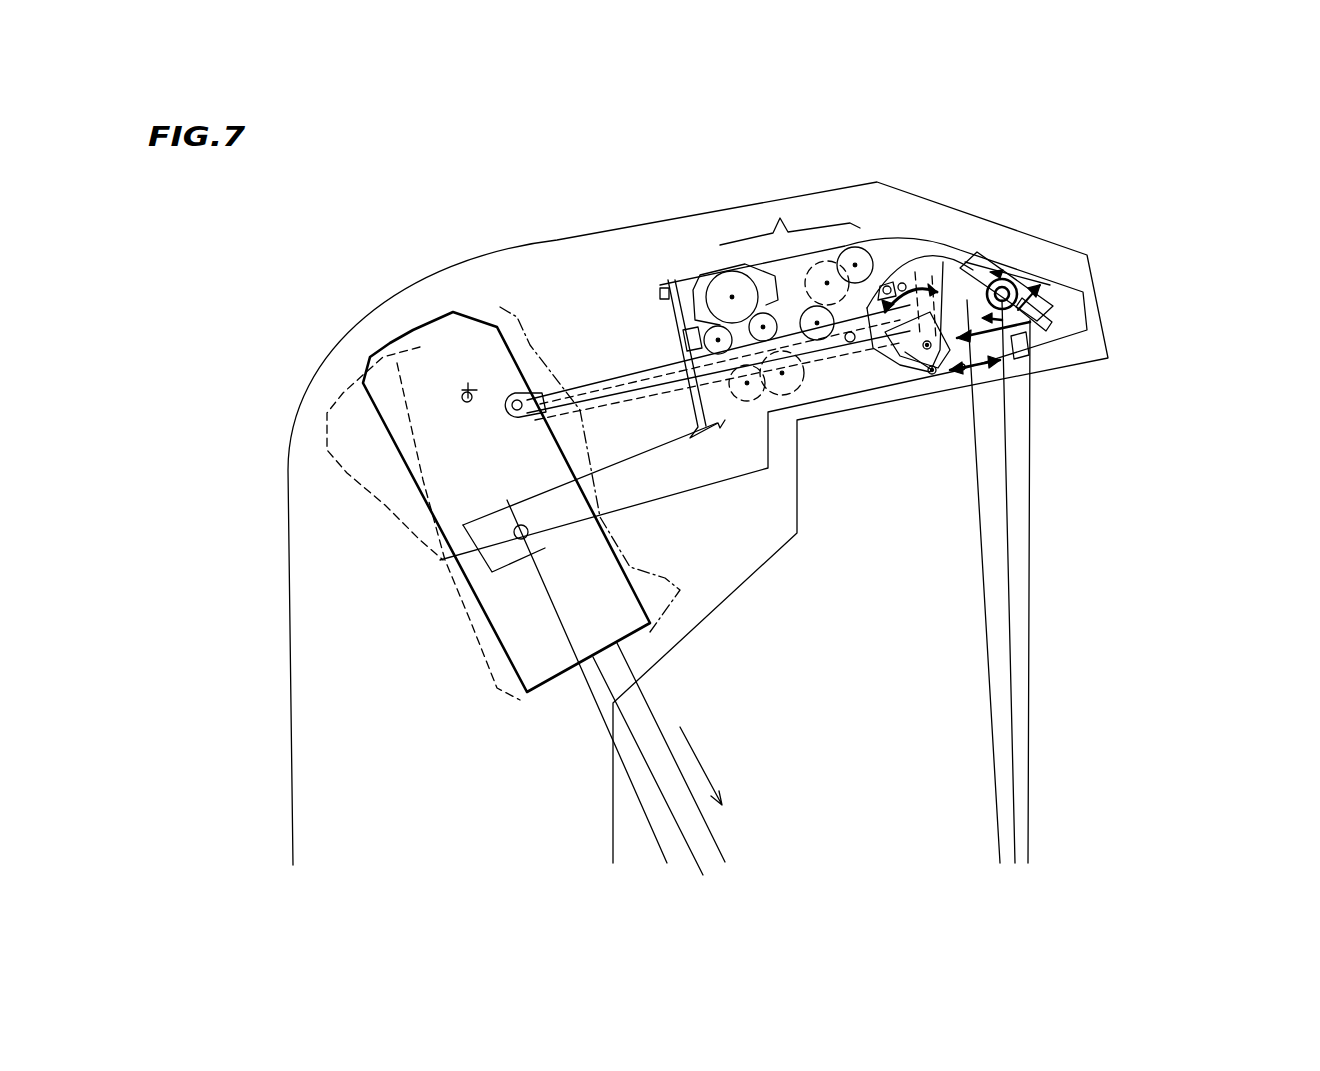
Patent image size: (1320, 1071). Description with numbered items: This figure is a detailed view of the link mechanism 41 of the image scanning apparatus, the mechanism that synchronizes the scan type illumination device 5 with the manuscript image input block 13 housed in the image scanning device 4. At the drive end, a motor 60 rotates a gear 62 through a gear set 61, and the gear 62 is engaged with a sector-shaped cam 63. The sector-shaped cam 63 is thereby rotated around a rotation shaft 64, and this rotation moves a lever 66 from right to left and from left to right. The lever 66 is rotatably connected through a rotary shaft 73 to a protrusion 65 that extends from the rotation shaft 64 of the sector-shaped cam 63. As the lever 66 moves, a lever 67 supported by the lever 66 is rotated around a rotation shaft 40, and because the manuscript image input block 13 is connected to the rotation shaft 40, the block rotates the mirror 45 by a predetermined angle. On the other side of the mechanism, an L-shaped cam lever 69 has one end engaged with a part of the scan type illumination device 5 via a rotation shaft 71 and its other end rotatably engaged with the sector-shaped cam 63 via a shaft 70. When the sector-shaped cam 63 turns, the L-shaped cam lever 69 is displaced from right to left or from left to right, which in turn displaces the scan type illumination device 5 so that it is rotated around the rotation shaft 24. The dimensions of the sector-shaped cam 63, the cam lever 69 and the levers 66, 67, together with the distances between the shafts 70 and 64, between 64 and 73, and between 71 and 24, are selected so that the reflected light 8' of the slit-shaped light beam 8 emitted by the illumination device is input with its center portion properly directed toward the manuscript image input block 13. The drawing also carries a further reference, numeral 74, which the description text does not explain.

The image scanning device 4 is at (667, 258).
The scan type illumination device 5 is at (393, 343).
The slit-shaped light beam 8 is at (659, 759).
The reflected light 8' is at (1048, 581).
The manuscript image input block 13 is at (1010, 278).
The rotation shaft 24 is at (513, 535).
The rotation shaft 40 is at (1030, 282).
The link mechanism 41 is at (597, 368).
The mirror 45 is at (1080, 292).
The motor 60 is at (720, 272).
The gear set 61 is at (780, 216).
The gear 62 is at (858, 247).
The sector-shaped cam 63 is at (933, 278).
The rotation shaft 64 is at (880, 365).
The protrusion 65 is at (900, 375).
The lever 66 is at (962, 367).
The lever 67 is at (1028, 335).
The L-shaped cam lever 69 is at (663, 370).
The shaft 70 is at (885, 277).
The rotation shaft 71 is at (467, 397).
The rotary shaft 73 is at (927, 372).
The link 74 is at (1013, 350).